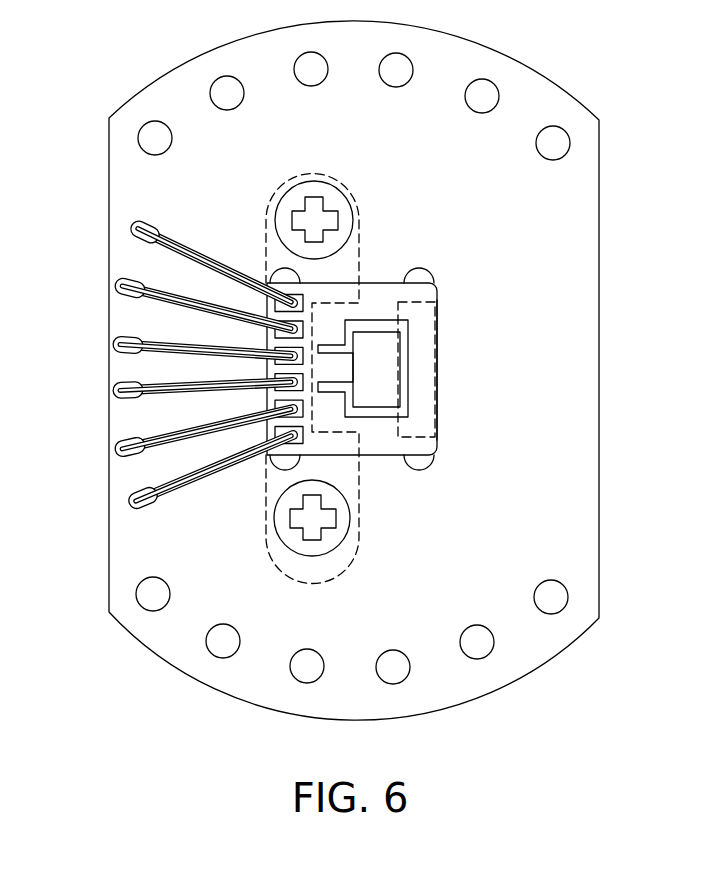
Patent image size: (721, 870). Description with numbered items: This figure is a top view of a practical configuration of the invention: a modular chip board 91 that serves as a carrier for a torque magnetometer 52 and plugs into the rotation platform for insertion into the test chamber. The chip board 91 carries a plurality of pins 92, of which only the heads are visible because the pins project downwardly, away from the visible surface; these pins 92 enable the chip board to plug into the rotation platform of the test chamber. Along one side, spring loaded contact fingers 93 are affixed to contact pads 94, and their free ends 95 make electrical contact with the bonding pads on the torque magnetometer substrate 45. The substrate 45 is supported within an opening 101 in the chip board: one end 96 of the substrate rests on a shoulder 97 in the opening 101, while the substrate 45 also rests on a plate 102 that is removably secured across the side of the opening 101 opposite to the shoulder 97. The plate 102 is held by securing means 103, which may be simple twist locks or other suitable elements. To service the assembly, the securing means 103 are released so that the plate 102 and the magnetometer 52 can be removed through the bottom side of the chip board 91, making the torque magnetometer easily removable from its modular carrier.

The chip board 91 is at (583, 206).
The pins 92 is at (479, 86).
The spring loaded contact fingers 93 is at (156, 369).
The contact pads 94 is at (135, 226).
The free ends 95 is at (305, 302).
The torque magnetometer substrate 45 is at (377, 295).
The shoulder 97 is at (440, 303).
The torque magnetometer 52 is at (390, 350).
The end of the substrate 96 is at (433, 395).
The opening 101 is at (432, 465).
The plate 102 is at (360, 518).
The securing means 103 is at (319, 183).